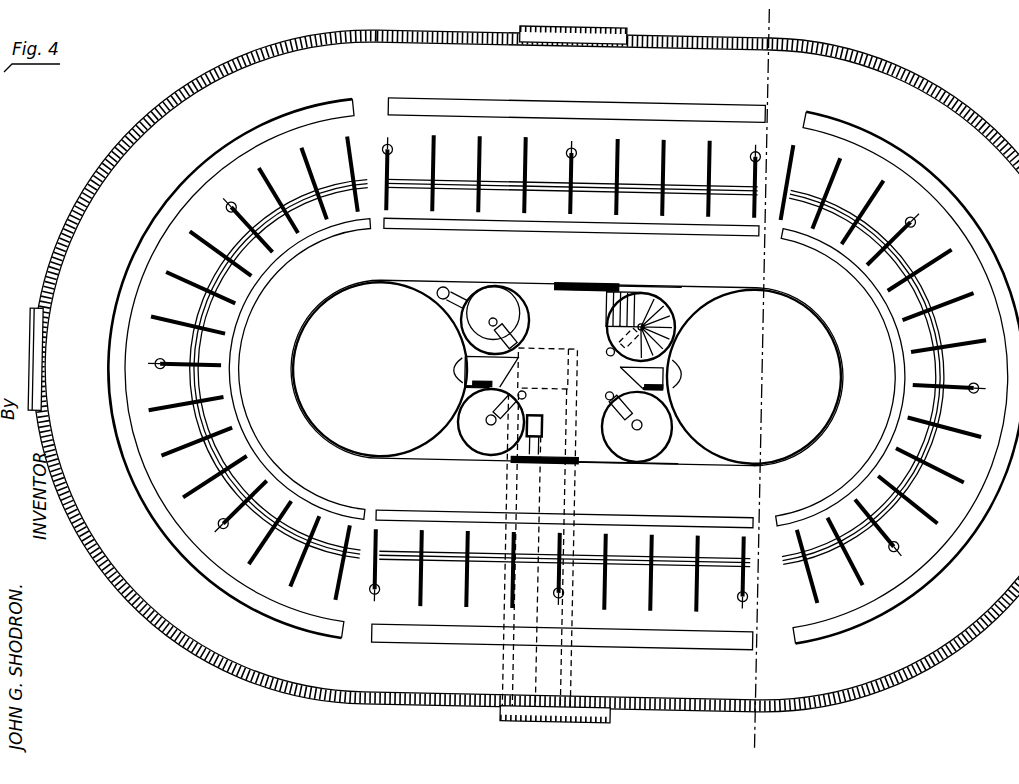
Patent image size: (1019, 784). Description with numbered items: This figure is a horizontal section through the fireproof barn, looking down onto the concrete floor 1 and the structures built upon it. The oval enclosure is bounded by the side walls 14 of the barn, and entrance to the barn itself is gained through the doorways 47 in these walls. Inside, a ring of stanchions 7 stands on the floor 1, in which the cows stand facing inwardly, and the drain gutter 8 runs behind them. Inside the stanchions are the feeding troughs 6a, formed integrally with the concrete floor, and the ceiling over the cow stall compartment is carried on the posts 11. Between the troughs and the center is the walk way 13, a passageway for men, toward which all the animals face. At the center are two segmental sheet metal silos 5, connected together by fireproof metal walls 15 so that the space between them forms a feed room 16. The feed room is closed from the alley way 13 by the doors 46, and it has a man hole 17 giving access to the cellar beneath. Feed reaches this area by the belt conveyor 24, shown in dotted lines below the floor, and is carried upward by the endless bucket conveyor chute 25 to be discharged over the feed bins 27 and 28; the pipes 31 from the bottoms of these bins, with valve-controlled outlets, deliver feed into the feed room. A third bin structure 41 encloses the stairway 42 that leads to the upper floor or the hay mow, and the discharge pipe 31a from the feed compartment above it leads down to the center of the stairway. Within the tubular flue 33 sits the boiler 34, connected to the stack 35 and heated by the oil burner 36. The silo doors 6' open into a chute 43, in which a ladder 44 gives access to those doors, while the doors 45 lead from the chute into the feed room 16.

The floor of the barn 1 is at (786, 18).
The segmental sheet metal silo 5 is at (296, 370).
The feeding trough 6a is at (444, 233).
The silo door 6' is at (568, 365).
The stanchion 7 is at (472, 160).
The drain gutter 8 is at (439, 108).
The post 11 is at (572, 154).
The walk way 13 is at (378, 268).
The side wall 14 is at (922, 75).
The fireproof metal wall 15 is at (605, 463).
The feed room 16 is at (580, 336).
The man hole 17 is at (577, 360).
The belt conveyor 24 is at (542, 660).
The endless bucket conveyor chute 25 is at (540, 416).
The feed bin 27 is at (481, 448).
The feed bin 28 is at (651, 452).
The pipe 31 is at (490, 419).
The discharge pipe 31a is at (631, 290).
The tubular flue 33 is at (515, 298).
The boiler 34 is at (489, 295).
The stack 35 is at (443, 289).
The oil burner 36 is at (508, 333).
The third bin structure 41 is at (650, 297).
The stairway 42 is at (667, 316).
The chute 43 is at (462, 356).
The ladder 44 is at (466, 387).
The door 45 is at (518, 376).
The door 46 is at (587, 283).
The doorway 47 is at (598, 26).